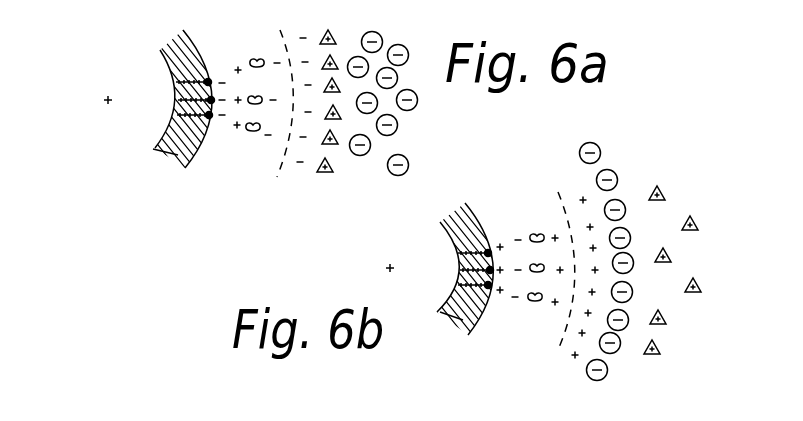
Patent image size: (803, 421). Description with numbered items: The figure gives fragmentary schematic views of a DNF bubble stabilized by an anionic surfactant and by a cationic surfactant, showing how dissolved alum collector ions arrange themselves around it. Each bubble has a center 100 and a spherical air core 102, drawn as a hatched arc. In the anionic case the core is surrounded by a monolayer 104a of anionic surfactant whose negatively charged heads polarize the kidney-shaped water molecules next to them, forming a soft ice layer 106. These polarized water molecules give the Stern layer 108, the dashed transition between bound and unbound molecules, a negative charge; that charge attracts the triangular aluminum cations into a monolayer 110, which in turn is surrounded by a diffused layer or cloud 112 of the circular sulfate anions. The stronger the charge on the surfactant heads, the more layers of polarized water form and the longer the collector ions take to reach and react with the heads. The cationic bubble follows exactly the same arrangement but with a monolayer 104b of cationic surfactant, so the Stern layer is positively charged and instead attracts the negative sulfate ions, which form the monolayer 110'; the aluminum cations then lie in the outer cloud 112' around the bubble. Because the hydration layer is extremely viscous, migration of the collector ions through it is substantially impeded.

In FIG. 6A, the center 100 is at (106, 104).
In FIG. 6B, the center 100 is at (386, 268).
In FIG. 6A, the spherical air core 102 is at (133, 122).
In FIG. 6B, the spherical air core 102 is at (422, 265).
In FIG. 6A, the monolayer of anionic surfactant 104a is at (176, 154).
In FIG. 6B, the monolayer of cationic surfactant 104b is at (452, 317).
In FIG. 6A, the soft ice layer 106 is at (238, 157).
In FIG. 6B, the soft ice layer 106 is at (525, 323).
In FIG. 6A, the Stern layer 108 is at (278, 180).
In FIG. 6B, the Stern layer 108 is at (555, 353).
In FIG. 6A, the monolayer of Al+3 ions 110 is at (314, 138).
In FIG. 6A, the diffused layer or cloud of SO4-2 ions 112 is at (383, 124).
In FIG. 6B, the monolayer of SO4-2 ions 110' is at (687, 276).
In FIG. 6B, the cloud of Al+3 ions 112' is at (622, 272).